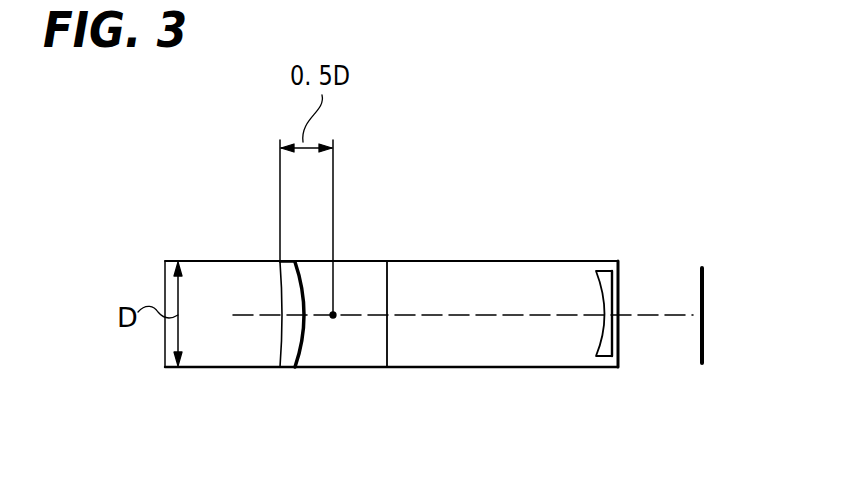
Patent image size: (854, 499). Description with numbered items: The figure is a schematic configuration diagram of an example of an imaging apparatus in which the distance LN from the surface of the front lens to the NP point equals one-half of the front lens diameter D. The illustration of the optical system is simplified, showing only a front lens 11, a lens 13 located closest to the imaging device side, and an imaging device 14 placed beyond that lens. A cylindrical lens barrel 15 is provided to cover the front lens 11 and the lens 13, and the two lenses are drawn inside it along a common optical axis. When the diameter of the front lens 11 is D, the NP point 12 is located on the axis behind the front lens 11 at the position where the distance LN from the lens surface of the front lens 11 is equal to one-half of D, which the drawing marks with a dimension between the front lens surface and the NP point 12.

The front lens 11 is at (290, 352).
The NP point 12 is at (333, 315).
The lens 13 is at (610, 348).
The imaging device 14 is at (698, 345).
The lens barrel 15 is at (517, 368).